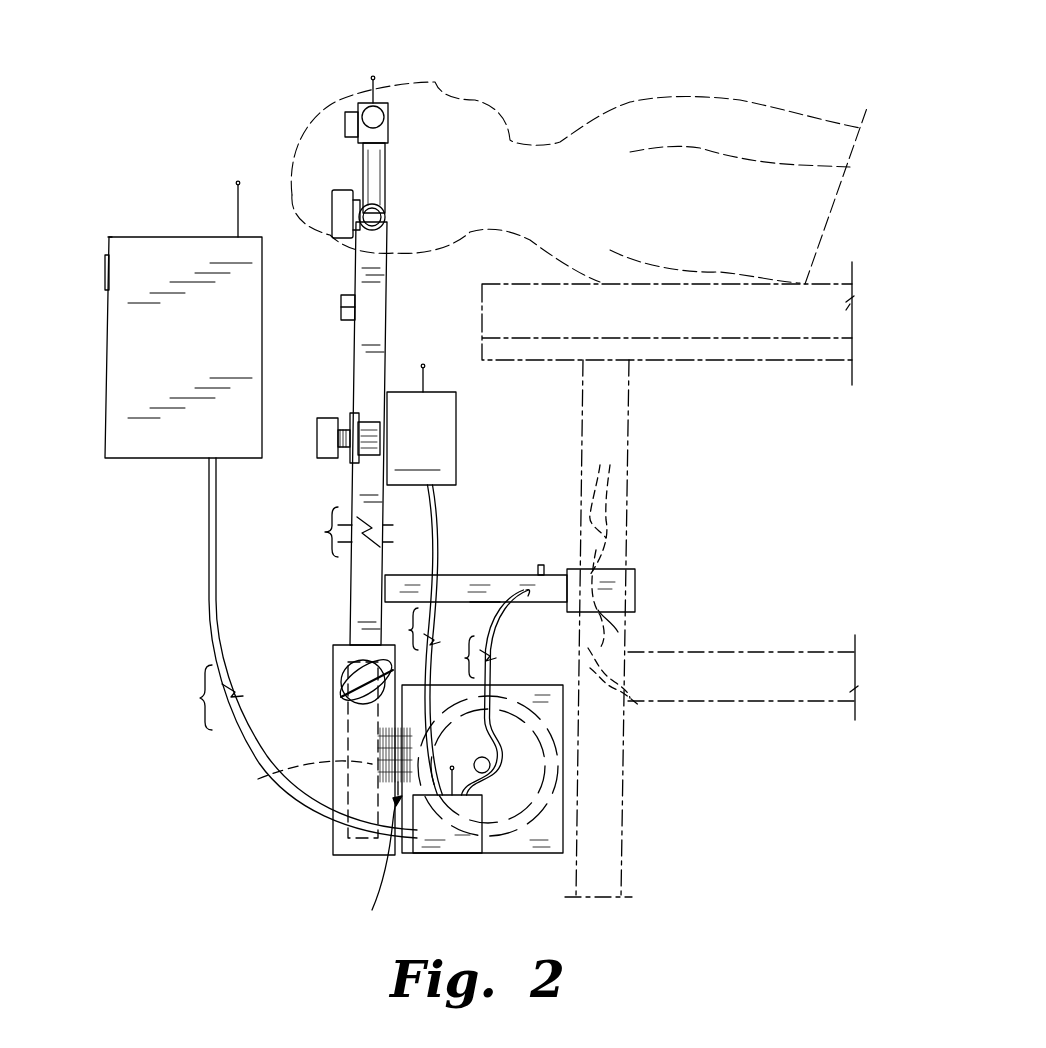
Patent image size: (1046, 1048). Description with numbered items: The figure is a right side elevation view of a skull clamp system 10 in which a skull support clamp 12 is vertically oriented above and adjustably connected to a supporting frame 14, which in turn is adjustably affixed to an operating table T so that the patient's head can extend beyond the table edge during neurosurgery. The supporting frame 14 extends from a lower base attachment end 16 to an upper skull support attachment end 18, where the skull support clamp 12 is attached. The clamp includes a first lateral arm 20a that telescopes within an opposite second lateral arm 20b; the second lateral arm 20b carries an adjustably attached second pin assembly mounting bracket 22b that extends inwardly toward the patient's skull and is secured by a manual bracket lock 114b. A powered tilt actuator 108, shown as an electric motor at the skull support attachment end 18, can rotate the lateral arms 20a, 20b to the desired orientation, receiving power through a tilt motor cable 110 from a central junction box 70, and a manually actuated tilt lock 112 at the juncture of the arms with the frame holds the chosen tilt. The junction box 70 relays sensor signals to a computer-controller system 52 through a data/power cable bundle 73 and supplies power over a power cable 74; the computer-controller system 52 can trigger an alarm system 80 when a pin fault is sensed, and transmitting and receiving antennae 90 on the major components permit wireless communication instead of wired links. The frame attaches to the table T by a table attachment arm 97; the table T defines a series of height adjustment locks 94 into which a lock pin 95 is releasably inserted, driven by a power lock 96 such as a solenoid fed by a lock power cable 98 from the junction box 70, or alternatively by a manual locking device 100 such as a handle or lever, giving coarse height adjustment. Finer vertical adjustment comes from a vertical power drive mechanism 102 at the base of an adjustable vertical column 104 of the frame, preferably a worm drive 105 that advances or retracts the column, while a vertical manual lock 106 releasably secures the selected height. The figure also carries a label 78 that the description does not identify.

The skull clamp system 10 is at (232, 137).
The skull support clamp 12 is at (417, 124).
The supporting frame 14 is at (345, 491).
The lower base attachment end 16 is at (332, 742).
The upper skull support attachment end 18 is at (347, 465).
The first lateral arm 20a is at (367, 423).
The second lateral arm 20b is at (390, 302).
The second pin assembly mounting bracket 22b is at (392, 160).
The computer-controller system 52 is at (109, 236).
The central junction box 70 is at (470, 856).
The data/power cable bundle 73 is at (210, 600).
The power cable 74 is at (637, 588).
The fluid reservoir 78 is at (105, 325).
The alarm system 80 is at (104, 262).
The transmitting and receiving antennae 90 is at (373, 78).
The height adjustment locks 94 is at (606, 692).
The lock pin 95 is at (600, 612).
The power lock 96 is at (520, 605).
The table attachment arm 97 is at (494, 575).
The lock power cable 98 is at (492, 600).
The manual locking device 100 is at (541, 564).
The vertical power drive mechanism 102 is at (372, 910).
The adjustable vertical column 104 is at (258, 779).
The worm drive 105 is at (380, 776).
The vertical manual lock 106 is at (345, 690).
The powered tilt actuator 108 is at (457, 412).
The tilt motor cable 110 is at (440, 510).
The manually actuated tilt lock 112 is at (320, 440).
The manual bracket lock 114b is at (340, 240).
The table T is at (690, 378).